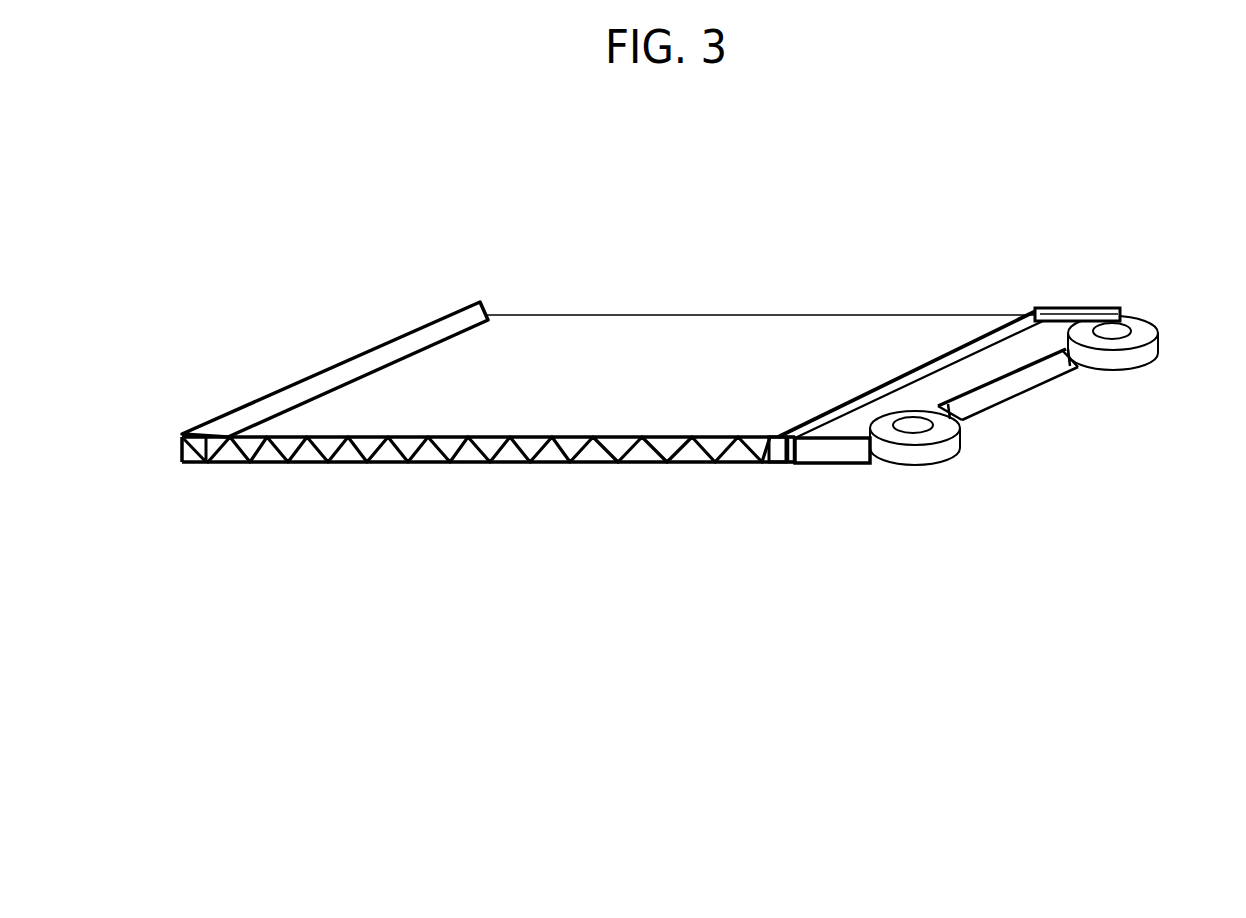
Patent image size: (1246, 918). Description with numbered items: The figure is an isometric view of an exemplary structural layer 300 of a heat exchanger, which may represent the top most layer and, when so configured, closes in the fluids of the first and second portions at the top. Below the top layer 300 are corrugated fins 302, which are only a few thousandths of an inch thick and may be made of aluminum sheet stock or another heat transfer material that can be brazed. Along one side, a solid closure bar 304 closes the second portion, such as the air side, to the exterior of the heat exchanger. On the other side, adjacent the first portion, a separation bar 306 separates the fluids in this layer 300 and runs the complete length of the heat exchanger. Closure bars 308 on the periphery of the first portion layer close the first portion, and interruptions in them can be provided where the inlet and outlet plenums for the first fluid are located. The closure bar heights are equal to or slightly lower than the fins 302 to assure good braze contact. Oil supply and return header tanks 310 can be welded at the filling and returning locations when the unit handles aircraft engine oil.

The structural layer 300 is at (718, 328).
The corrugated fins 302 is at (583, 462).
The solid closure bar 304 is at (327, 382).
The separation bar 306 is at (975, 340).
The closure bars 308 is at (1013, 388).
The oil supply and return header tanks 310 is at (925, 457).